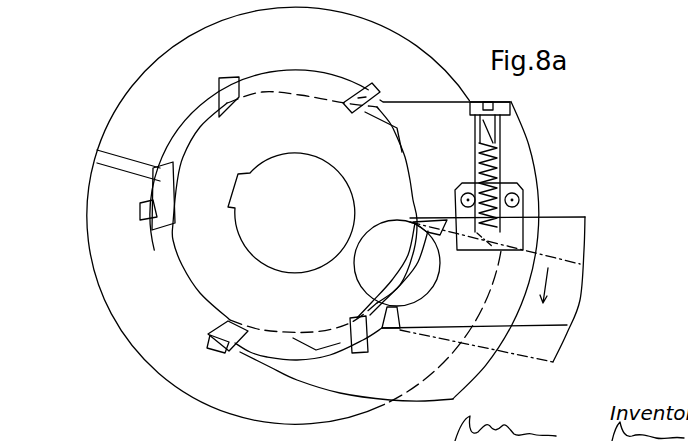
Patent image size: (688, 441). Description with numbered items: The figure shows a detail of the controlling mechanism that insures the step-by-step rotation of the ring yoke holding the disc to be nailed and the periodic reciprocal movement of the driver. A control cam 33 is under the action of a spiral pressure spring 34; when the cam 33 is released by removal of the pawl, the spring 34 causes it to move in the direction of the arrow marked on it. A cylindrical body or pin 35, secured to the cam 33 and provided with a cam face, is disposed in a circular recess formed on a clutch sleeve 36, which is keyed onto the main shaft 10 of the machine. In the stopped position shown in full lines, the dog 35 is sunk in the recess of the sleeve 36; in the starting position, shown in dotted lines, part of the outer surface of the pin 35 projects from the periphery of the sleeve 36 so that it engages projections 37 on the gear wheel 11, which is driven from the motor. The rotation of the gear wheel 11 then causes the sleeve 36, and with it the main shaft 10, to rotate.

The main shaft 10 is at (291, 263).
The gear wheel 11 is at (97, 242).
The control cam 33 is at (574, 291).
The spiral pressure spring 34 is at (497, 161).
The cylindrical body or pin 35 is at (416, 236).
The clutch sleeve 36 is at (172, 243).
The projections 37 is at (376, 94).